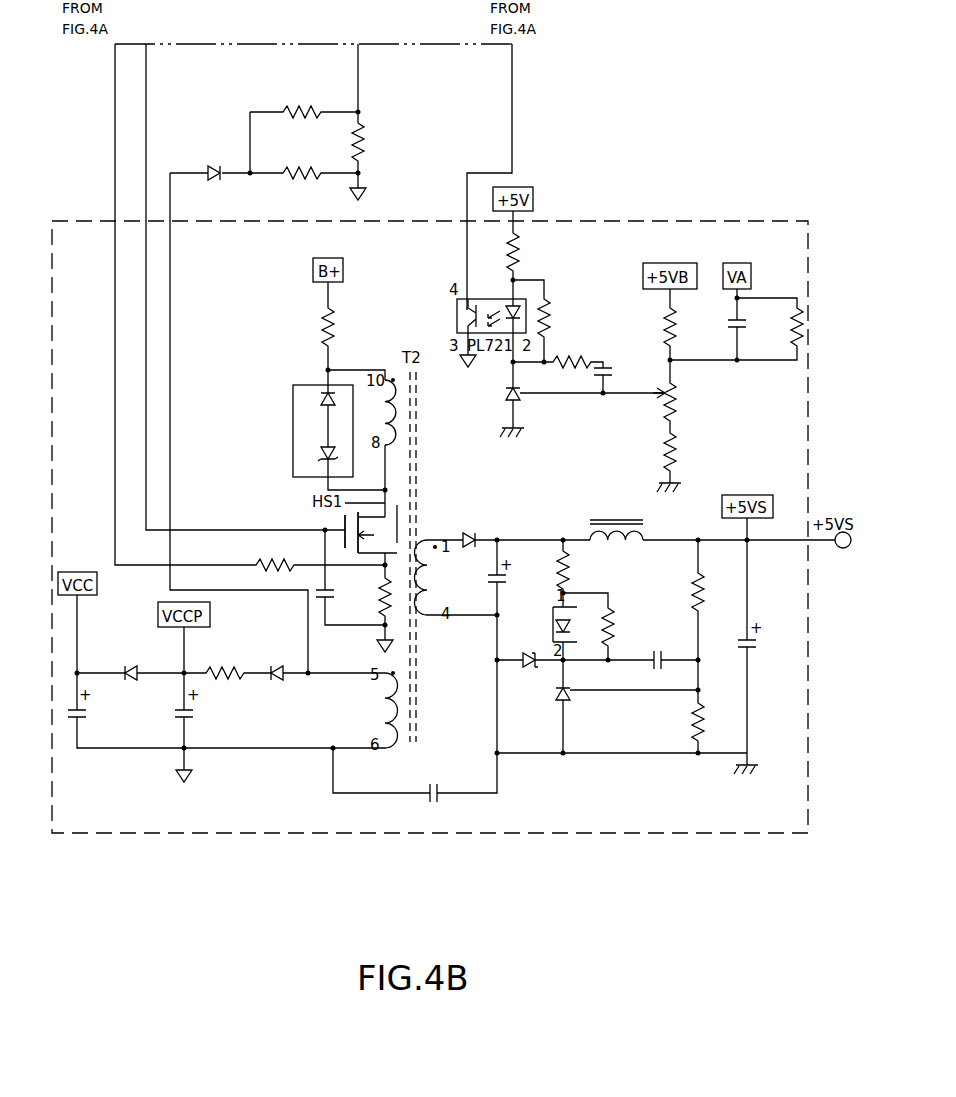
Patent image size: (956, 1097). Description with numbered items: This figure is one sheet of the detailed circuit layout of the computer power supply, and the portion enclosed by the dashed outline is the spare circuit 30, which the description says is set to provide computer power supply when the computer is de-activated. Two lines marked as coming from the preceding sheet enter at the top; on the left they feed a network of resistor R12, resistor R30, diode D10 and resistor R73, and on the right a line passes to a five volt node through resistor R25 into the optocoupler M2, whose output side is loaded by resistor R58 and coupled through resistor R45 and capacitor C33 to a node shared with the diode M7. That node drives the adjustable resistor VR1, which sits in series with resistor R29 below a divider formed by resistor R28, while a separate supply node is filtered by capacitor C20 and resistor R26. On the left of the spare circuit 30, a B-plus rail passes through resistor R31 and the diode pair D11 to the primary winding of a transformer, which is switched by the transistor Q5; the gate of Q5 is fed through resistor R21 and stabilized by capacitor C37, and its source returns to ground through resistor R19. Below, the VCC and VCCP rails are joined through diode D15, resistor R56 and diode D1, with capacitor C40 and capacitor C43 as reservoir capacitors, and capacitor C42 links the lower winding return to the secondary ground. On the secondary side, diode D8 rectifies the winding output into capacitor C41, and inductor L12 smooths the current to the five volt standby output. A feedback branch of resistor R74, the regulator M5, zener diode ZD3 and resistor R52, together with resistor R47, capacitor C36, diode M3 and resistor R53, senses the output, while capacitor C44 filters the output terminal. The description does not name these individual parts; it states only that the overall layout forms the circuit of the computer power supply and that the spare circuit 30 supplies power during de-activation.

The spare circuit 30 is at (547, 820).
The resistor R12 is at (302, 104).
The resistor R30 is at (302, 165).
The diode D10 is at (215, 164).
The resistor R73 is at (374, 142).
The resistor R25 is at (529, 252).
The optocoupler M2 is at (491, 306).
The resistor R58 is at (559, 318).
The resistor R45 is at (572, 353).
The capacitor C33 is at (618, 374).
The diode M7 is at (499, 397).
The variable resistor VR1 is at (686, 402).
The resistor R29 is at (686, 452).
The resistor R28 is at (654, 327).
The capacitor C20 is at (722, 323).
The resistor R26 is at (781, 327).
The resistor R31 is at (345, 327).
The diode pair D11 is at (323, 431).
The MOSFET Q5 is at (361, 532).
The resistor R21 is at (275, 556).
The capacitor C37 is at (338, 583).
The resistor R19 is at (368, 598).
The diode D15 is at (128, 663).
The resistor R56 is at (225, 662).
The diode D1 is at (276, 662).
The capacitor C40 is at (93, 719).
The capacitor C43 is at (200, 719).
The capacitor C42 is at (433, 802).
The diode D8 is at (470, 530).
The capacitor C41 is at (480, 585).
The inductor L12 is at (616, 519).
The resistor R74 is at (579, 570).
The shunt regulator M5 is at (538, 618).
The zener diode ZD3 is at (521, 651).
The resistor R52 is at (623, 627).
The resistor R47 is at (682, 592).
The capacitor C36 is at (658, 669).
The diode M3 is at (548, 692).
The resistor R53 is at (682, 722).
The capacitor C44 is at (762, 647).